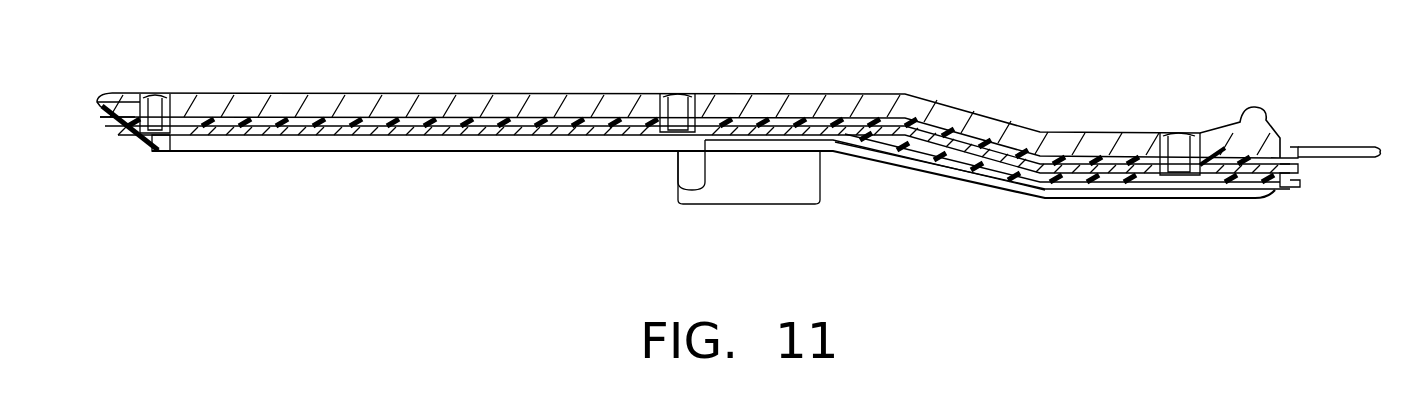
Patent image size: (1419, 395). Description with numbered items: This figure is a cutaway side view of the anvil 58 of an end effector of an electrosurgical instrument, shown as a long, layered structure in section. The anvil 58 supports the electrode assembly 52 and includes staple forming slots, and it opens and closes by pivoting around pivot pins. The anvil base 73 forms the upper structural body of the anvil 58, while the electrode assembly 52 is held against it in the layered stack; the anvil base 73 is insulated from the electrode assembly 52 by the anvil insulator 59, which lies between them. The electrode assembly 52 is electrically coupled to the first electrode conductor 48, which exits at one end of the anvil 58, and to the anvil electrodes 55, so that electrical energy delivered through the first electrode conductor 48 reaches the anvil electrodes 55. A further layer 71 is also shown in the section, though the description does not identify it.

The anvil 58 is at (415, 70).
The anvil base 73 is at (228, 96).
The anvil insulator 59 is at (508, 124).
The electrode assembly 52 is at (608, 110).
The lower electrode layer 71 is at (1082, 180).
The anvil electrodes 55 is at (405, 153).
The first electrode conductor 48 is at (1330, 160).